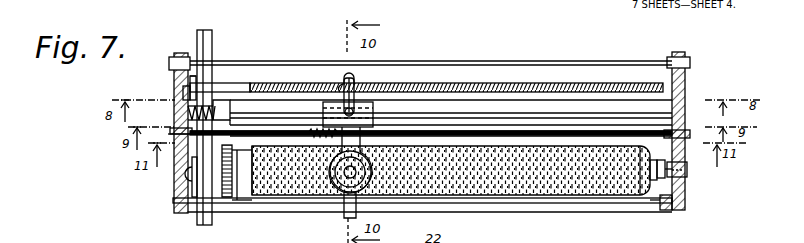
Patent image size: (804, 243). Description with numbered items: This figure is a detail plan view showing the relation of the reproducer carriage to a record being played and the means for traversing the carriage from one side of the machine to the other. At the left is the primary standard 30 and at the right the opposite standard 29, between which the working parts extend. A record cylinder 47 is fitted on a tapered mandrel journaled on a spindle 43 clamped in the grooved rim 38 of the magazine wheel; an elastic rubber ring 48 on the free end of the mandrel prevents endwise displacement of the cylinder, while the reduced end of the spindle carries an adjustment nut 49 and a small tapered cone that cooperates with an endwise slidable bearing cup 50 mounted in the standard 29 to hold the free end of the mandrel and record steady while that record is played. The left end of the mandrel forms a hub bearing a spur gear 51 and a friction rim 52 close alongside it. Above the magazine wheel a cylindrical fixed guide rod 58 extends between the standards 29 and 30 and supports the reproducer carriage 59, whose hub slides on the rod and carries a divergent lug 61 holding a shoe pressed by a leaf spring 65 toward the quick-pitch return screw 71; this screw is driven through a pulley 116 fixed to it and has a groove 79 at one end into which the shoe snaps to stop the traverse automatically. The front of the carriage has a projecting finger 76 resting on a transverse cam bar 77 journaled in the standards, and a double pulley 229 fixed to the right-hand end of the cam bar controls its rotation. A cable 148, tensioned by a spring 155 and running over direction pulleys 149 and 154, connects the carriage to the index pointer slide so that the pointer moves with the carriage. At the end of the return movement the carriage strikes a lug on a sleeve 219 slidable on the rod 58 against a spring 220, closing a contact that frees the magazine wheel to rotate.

The standard 29 is at (683, 106).
The primary standard 30 is at (176, 184).
The grooved rim 38 is at (200, 216).
The spindle 43 is at (652, 172).
The record cylinder 47 is at (467, 172).
The elastic rubber ring 48 is at (667, 136).
The adjustment nut 49 is at (661, 180).
The endwise slidable bearing cup 50 is at (688, 172).
The spur gear 51 is at (228, 196).
The friction rim 52 is at (236, 190).
The guide rod 58 is at (431, 128).
The reproducer carriage 59 is at (366, 108).
The divergent lug 61 is at (352, 80).
The leaf spring 65 is at (342, 86).
The return screw 71 is at (456, 80).
The finger 76 is at (345, 216).
The cam bar 77 is at (503, 212).
The groove 79 is at (258, 86).
The pulley 116 is at (190, 79).
The cable 148 is at (451, 128).
The direction pulley 149 is at (682, 136).
The direction pulley 154 is at (178, 129).
The spring 155 is at (310, 131).
The sleeve 219 is at (219, 106).
The spring 220 is at (184, 95).
The double pulley 229 is at (668, 211).